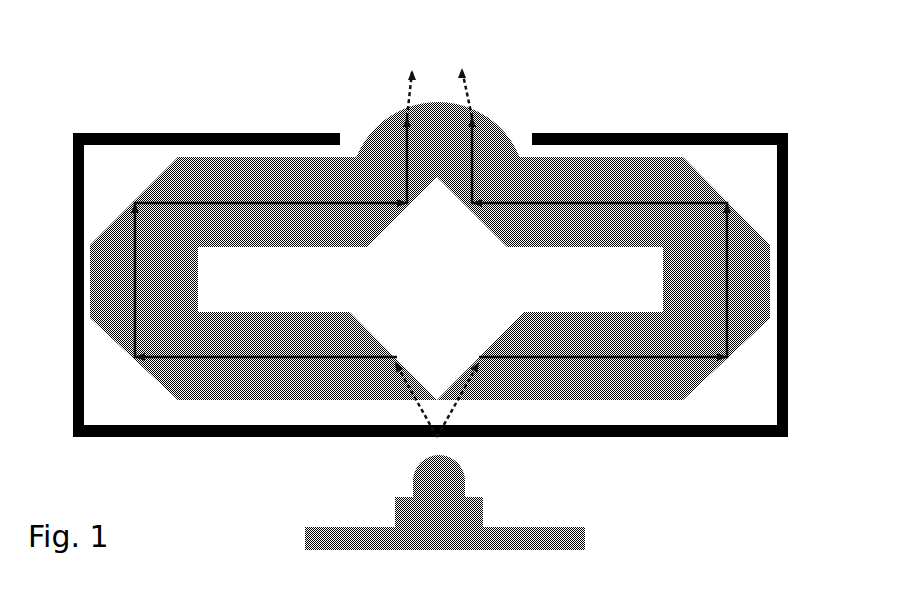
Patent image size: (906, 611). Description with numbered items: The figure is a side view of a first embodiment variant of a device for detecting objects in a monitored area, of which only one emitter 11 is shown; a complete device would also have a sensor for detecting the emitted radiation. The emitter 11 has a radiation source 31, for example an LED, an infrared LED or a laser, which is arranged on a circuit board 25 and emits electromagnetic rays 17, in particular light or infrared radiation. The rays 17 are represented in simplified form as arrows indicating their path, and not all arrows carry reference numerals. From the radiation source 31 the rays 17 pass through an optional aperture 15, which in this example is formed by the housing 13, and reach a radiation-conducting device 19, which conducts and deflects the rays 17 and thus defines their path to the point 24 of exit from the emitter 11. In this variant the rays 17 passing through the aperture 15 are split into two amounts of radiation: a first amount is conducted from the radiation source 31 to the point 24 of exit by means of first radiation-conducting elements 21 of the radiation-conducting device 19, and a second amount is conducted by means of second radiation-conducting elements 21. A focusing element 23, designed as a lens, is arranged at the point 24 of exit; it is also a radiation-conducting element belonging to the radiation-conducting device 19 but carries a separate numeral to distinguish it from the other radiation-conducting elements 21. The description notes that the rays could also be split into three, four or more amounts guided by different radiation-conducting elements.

The emitter 11 is at (237, 486).
The housing 13 is at (203, 133).
The aperture 15 is at (431, 444).
The rays 17 is at (405, 150).
The radiation-conducting device 19 is at (216, 294).
The radiation-conducting elements 21 is at (153, 183).
The focusing element 23 is at (493, 120).
The point of exit 24 is at (414, 82).
The circuit board 25 is at (557, 530).
The radiation source 31 is at (448, 480).